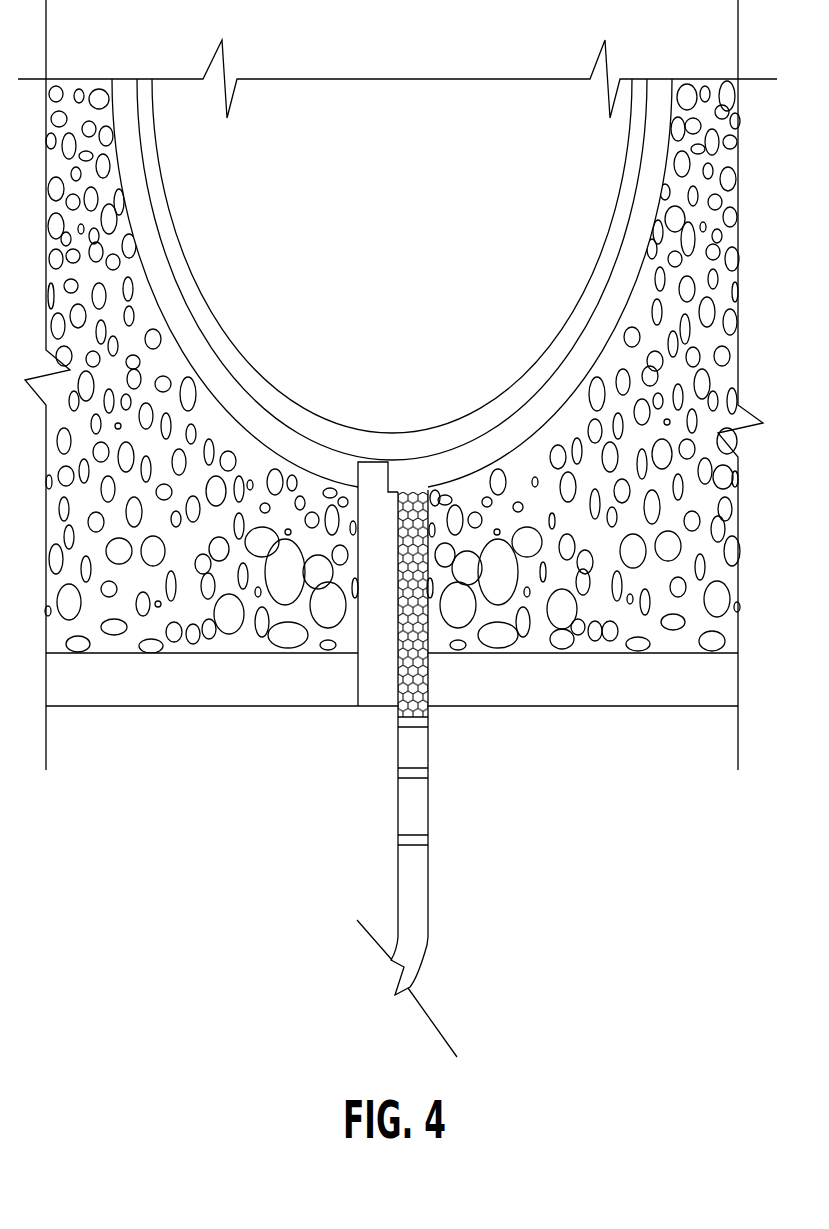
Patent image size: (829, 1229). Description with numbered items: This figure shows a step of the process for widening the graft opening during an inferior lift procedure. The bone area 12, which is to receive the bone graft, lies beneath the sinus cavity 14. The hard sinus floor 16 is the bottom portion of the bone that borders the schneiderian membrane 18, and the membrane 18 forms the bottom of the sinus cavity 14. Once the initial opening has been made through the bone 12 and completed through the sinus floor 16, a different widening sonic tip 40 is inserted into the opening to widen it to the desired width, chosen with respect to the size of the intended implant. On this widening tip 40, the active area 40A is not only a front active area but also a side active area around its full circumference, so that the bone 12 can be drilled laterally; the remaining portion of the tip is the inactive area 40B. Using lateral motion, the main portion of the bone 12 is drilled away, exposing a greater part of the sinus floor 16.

The bone area 12 is at (638, 443).
The sinus cavity 14 is at (379, 178).
The sinus floor 16 is at (255, 430).
The schneiderian membrane 18 is at (207, 303).
The widening sonic tip 40 is at (401, 695).
The active area 40A is at (409, 525).
The inactive area 40B is at (408, 745).